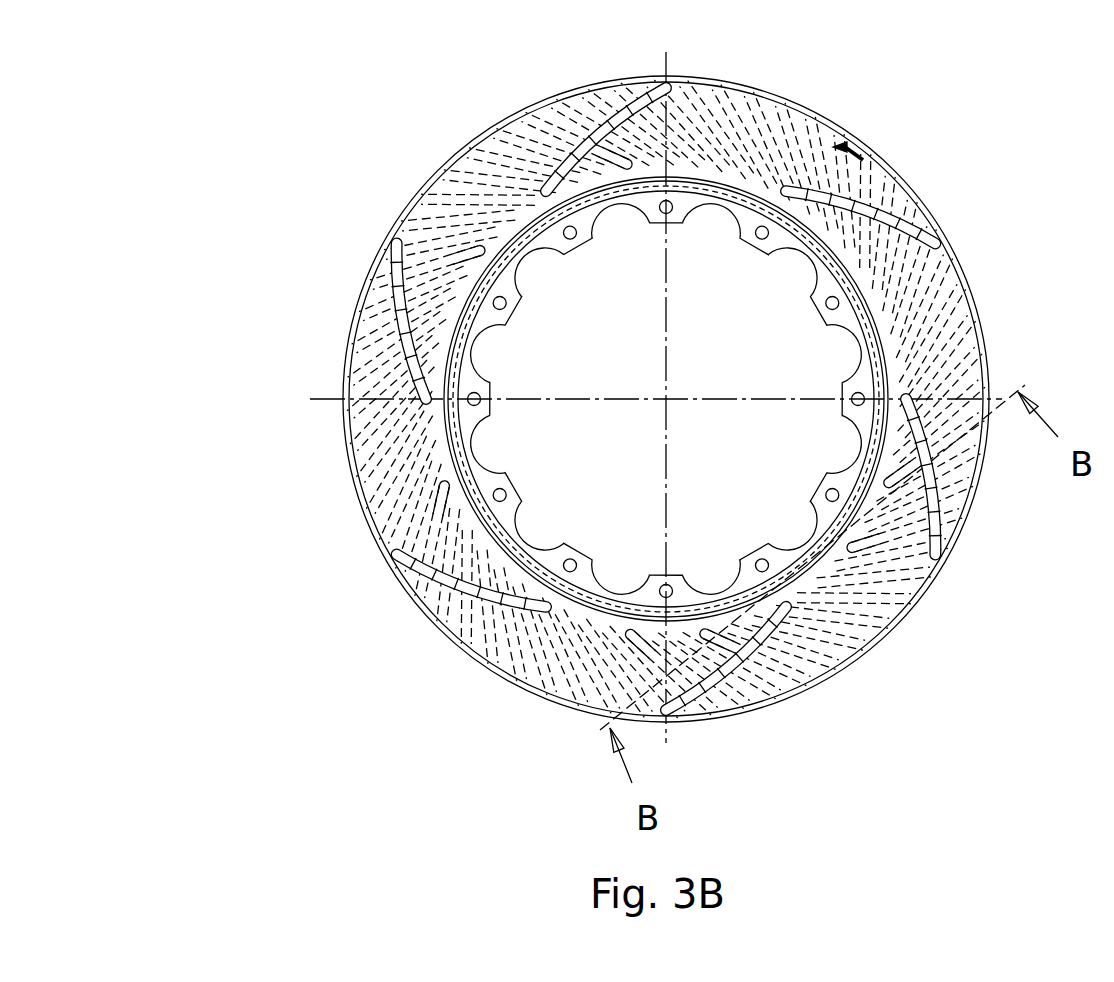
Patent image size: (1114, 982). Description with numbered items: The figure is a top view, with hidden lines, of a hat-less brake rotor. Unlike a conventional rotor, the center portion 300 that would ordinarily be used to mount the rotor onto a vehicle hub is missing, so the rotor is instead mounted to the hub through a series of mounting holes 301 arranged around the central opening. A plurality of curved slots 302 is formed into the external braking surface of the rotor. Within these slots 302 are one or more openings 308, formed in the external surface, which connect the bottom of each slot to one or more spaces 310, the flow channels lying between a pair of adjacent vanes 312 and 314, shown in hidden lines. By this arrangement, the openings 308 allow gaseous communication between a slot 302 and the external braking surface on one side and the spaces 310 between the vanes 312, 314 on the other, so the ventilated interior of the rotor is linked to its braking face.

The center portion 300 is at (666, 399).
The mounting holes 301 is at (572, 242).
The slots 302 is at (647, 92).
The openings 308 is at (398, 250).
The spaces 310 is at (847, 147).
The vane 312 is at (810, 110).
The vane 314 is at (863, 147).